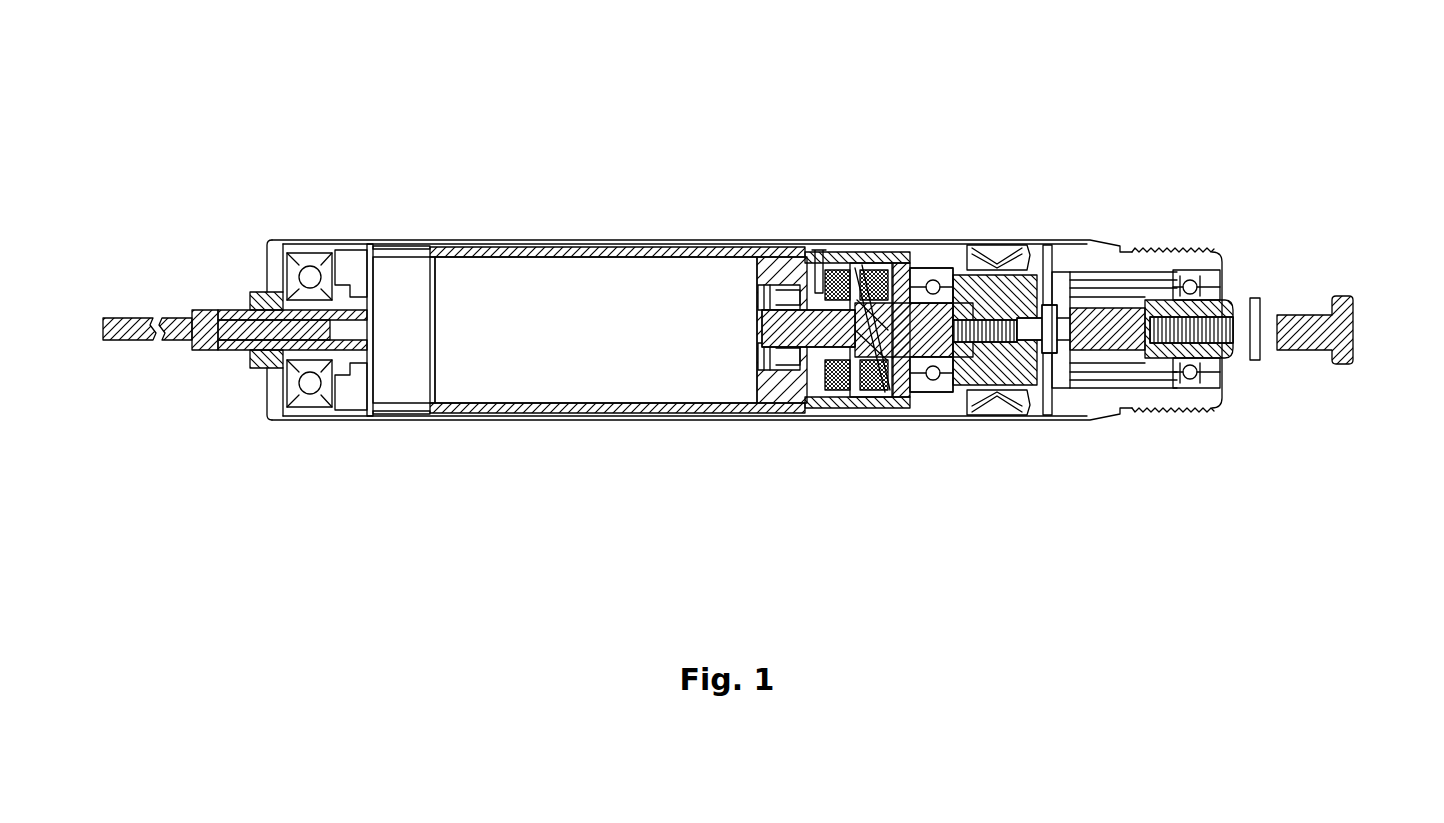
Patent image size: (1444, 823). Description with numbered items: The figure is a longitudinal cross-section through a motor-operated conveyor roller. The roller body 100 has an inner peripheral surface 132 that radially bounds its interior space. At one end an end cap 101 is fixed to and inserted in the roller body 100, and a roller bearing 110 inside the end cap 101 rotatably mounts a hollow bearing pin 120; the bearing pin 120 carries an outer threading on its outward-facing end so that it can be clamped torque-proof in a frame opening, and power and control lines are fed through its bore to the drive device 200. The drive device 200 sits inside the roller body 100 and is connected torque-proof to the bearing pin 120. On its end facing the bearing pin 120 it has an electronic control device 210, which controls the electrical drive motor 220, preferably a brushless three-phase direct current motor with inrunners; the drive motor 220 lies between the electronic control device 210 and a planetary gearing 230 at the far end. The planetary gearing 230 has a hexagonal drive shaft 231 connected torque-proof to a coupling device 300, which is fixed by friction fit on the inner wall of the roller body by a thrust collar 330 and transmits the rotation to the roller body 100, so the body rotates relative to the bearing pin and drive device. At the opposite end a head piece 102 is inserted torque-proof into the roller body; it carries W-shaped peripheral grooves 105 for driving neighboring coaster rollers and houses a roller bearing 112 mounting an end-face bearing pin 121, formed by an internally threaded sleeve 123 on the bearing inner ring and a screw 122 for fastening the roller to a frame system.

The roller body 100 is at (455, 238).
The end cap 101 is at (277, 238).
The head piece 102 is at (1120, 244).
The W-shaped peripheral grooves 105 is at (1215, 423).
The roller bearing 110 is at (303, 276).
The roller bearing 112 is at (1190, 287).
The bearing pin 120 is at (232, 312).
The end-face bearing pin 121 is at (1300, 208).
The screw 122 is at (1312, 316).
The sleeve 123 is at (1230, 362).
The inner peripheral surface 132 is at (673, 265).
The drive device 200 is at (562, 476).
The electronic control device 210 is at (400, 388).
The electrical drive motor 220 is at (507, 375).
The planetary gearing 230 is at (870, 388).
The drive shaft 231 is at (950, 330).
The coupling device 300 is at (980, 446).
The thrust collar 330 is at (995, 252).